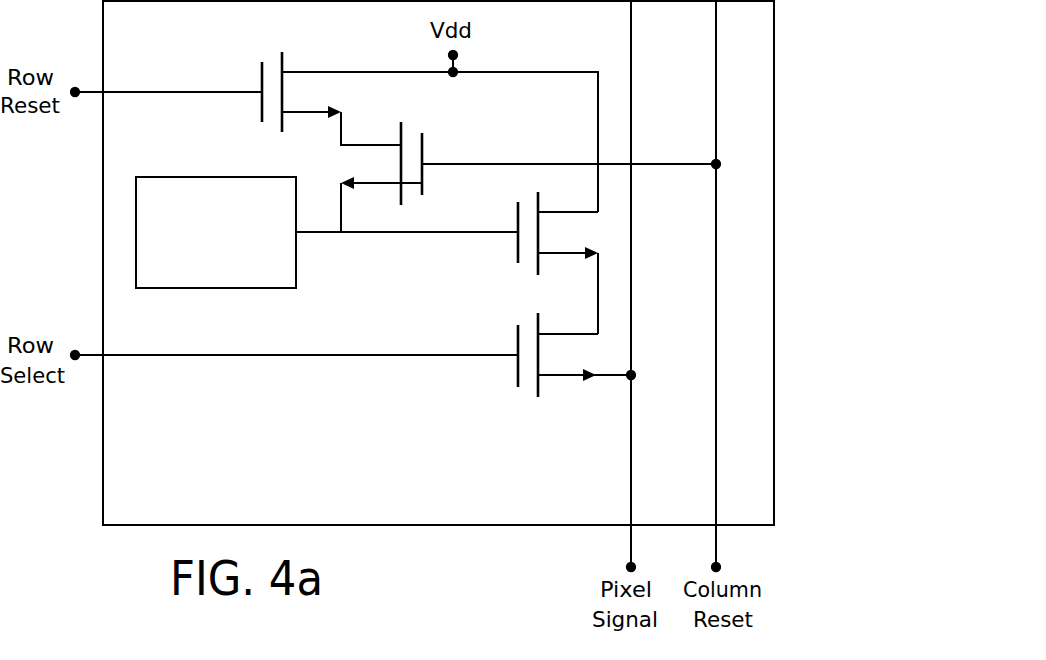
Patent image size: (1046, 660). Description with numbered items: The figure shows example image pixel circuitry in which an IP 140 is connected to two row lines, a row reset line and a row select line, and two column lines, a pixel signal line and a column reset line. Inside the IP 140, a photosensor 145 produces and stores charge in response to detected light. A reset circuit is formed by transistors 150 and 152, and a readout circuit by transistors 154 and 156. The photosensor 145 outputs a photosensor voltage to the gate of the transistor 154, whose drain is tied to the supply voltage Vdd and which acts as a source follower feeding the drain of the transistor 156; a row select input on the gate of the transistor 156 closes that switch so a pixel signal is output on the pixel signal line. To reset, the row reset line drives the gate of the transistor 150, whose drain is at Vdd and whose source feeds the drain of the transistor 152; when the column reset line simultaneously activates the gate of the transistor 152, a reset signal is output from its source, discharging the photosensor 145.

The IP 140 is at (438, 263).
The photosensor 145 is at (327, 232).
The transistor 150 is at (317, 89).
The transistor 152 is at (528, 170).
The transistor 154 is at (544, 254).
The transistor 156 is at (561, 346).